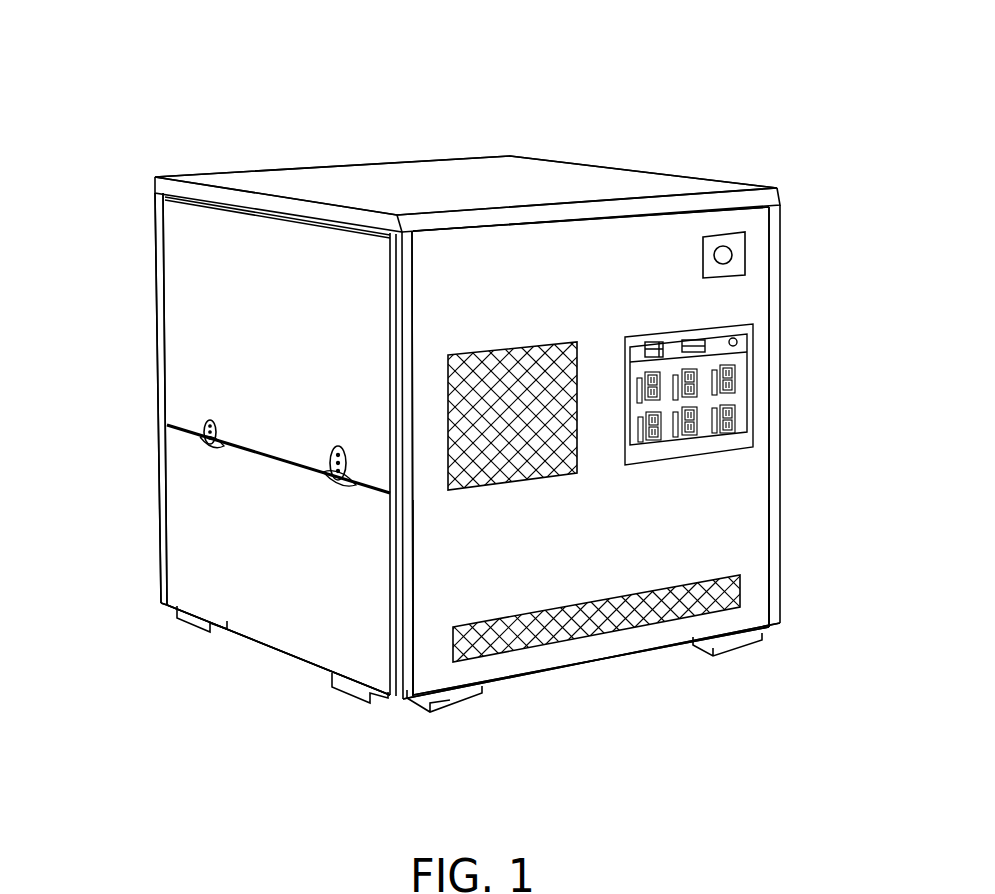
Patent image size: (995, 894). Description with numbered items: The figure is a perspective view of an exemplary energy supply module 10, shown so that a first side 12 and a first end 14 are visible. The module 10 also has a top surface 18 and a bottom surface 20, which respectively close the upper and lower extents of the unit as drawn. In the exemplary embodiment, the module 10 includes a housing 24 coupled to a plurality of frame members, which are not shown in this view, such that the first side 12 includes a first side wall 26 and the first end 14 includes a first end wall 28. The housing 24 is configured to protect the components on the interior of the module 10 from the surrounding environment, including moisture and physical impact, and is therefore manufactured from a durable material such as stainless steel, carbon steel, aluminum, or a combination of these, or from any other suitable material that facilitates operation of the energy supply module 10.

The energy supply module 10 is at (287, 97).
The first side 12 is at (255, 545).
The first end 14 is at (748, 467).
The top surface 18 is at (634, 180).
The bottom surface 20 is at (648, 668).
The housing 24 is at (128, 244).
The first side wall 26 is at (173, 482).
The first end wall 28 is at (748, 508).